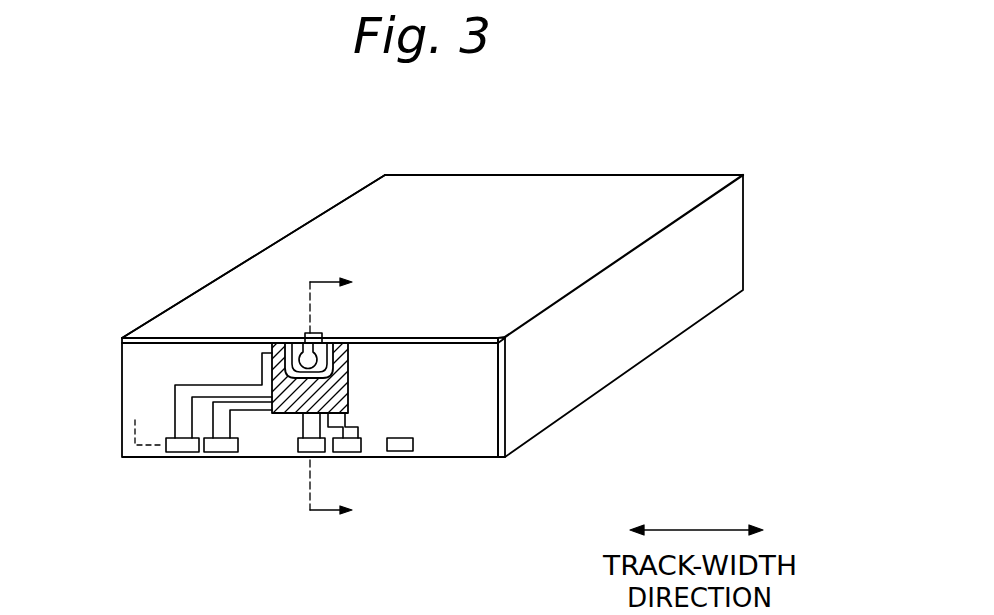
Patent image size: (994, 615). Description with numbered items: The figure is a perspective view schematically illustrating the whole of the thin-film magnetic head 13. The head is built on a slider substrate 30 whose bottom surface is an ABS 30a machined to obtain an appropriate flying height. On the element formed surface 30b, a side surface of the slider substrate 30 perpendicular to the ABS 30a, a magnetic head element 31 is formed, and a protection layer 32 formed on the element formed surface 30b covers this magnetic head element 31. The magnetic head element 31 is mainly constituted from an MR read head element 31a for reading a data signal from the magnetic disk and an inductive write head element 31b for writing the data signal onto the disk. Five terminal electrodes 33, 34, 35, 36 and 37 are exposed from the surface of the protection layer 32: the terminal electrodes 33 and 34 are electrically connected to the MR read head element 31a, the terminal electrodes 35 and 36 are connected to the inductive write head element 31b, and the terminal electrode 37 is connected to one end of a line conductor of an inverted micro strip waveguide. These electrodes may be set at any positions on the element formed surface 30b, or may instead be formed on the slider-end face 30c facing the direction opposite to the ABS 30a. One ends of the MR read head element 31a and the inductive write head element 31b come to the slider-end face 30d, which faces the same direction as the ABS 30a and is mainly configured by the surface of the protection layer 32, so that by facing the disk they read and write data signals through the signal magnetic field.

The thin-film magnetic head 13 is at (501, 147).
The slider substrate 30 is at (727, 240).
The ABS 30a is at (335, 220).
The element formed surface 30b is at (155, 337).
The slider-end face 30c is at (136, 448).
The slider-end face 30d is at (233, 338).
The magnetic head element 31 is at (466, 255).
The MR read head element 31a is at (318, 334).
The inductive write head element 31b is at (330, 333).
The protection layer 32 is at (500, 413).
The terminal electrode 33 is at (183, 448).
The terminal electrode 34 is at (222, 448).
The terminal electrode 35 is at (315, 448).
The terminal electrode 36 is at (348, 448).
The terminal electrode 37 is at (405, 448).